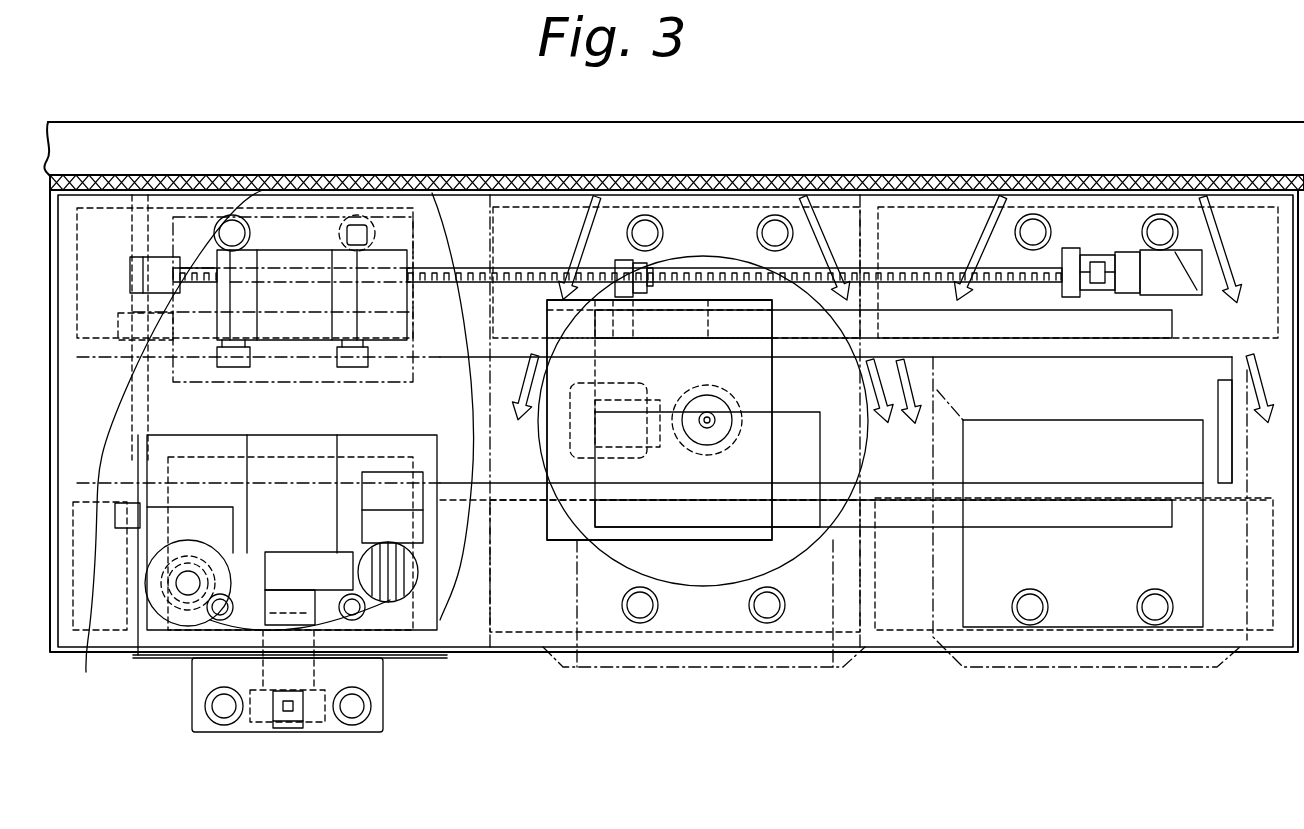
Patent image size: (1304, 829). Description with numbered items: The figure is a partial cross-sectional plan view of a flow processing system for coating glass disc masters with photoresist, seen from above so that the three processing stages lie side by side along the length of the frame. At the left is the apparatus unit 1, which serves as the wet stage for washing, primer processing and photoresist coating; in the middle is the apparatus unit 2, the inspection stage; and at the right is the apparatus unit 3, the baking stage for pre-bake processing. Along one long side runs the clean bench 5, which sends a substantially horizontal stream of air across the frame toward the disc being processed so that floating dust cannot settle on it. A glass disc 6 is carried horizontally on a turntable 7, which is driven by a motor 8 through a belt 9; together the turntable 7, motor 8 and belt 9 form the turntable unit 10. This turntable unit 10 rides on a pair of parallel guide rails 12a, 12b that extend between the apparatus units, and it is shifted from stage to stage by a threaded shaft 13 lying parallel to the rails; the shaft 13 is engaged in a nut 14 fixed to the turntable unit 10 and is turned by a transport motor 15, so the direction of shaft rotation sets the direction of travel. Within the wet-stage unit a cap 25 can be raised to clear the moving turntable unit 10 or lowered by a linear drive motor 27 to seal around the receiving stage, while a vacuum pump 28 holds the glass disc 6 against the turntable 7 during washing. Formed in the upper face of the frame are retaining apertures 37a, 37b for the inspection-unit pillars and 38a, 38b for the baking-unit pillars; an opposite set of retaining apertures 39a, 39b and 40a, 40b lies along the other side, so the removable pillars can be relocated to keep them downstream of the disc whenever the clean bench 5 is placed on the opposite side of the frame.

The apparatus unit 1 is at (158, 678).
The apparatus unit 2 is at (569, 663).
The apparatus unit 3 is at (941, 658).
The clean bench 5 is at (985, 128).
The glass disc 6 is at (878, 452).
The turntable 7 is at (724, 431).
The motor 8 is at (547, 445).
The belt 9 is at (718, 396).
The turntable unit 10 is at (773, 378).
The guide rail 12a is at (1093, 528).
The guide rail 12b is at (1113, 330).
The threaded shaft 13 is at (928, 268).
The nut 14 is at (615, 263).
The transport motor 15 is at (1208, 266).
The cap 25 is at (166, 447).
The linear drive motor 27 is at (293, 734).
The vacuum pump 28 is at (440, 622).
The retaining aperture 37a is at (640, 611).
The retaining aperture 37b is at (767, 611).
The retaining aperture 38a is at (1030, 613).
The retaining aperture 38b is at (1155, 613).
The retaining aperture 39a is at (648, 232).
The retaining aperture 39b is at (775, 232).
The retaining aperture 40a is at (1035, 231).
The retaining aperture 40b is at (1160, 231).